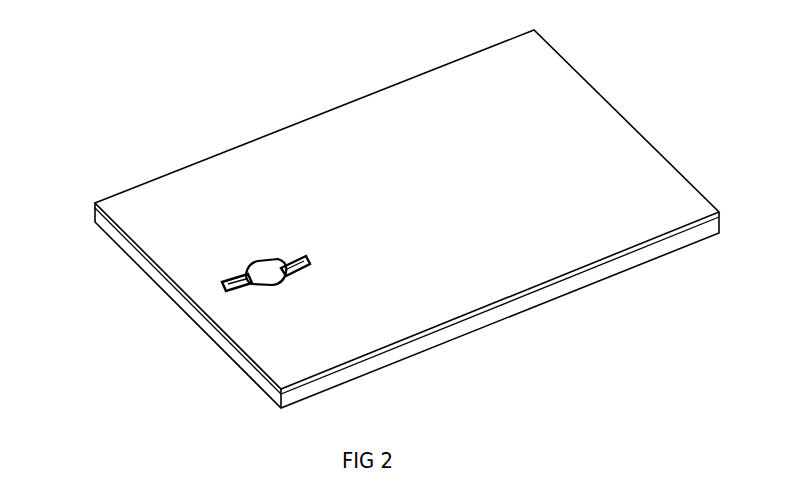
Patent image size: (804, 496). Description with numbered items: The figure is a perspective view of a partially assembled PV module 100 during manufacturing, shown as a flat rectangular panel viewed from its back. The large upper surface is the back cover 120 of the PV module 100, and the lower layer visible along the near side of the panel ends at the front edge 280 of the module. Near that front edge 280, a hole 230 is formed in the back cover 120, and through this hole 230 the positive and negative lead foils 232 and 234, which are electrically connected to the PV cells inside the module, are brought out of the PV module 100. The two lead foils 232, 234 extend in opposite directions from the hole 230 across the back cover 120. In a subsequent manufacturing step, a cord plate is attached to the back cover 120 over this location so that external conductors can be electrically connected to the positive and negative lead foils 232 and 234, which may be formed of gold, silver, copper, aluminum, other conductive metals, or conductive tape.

The PV module 100 is at (390, 212).
The back cover 120 is at (370, 122).
The hole 230 is at (317, 251).
The positive lead foil 232 is at (308, 267).
The negative lead foil 234 is at (221, 283).
The front edge 280 is at (153, 281).